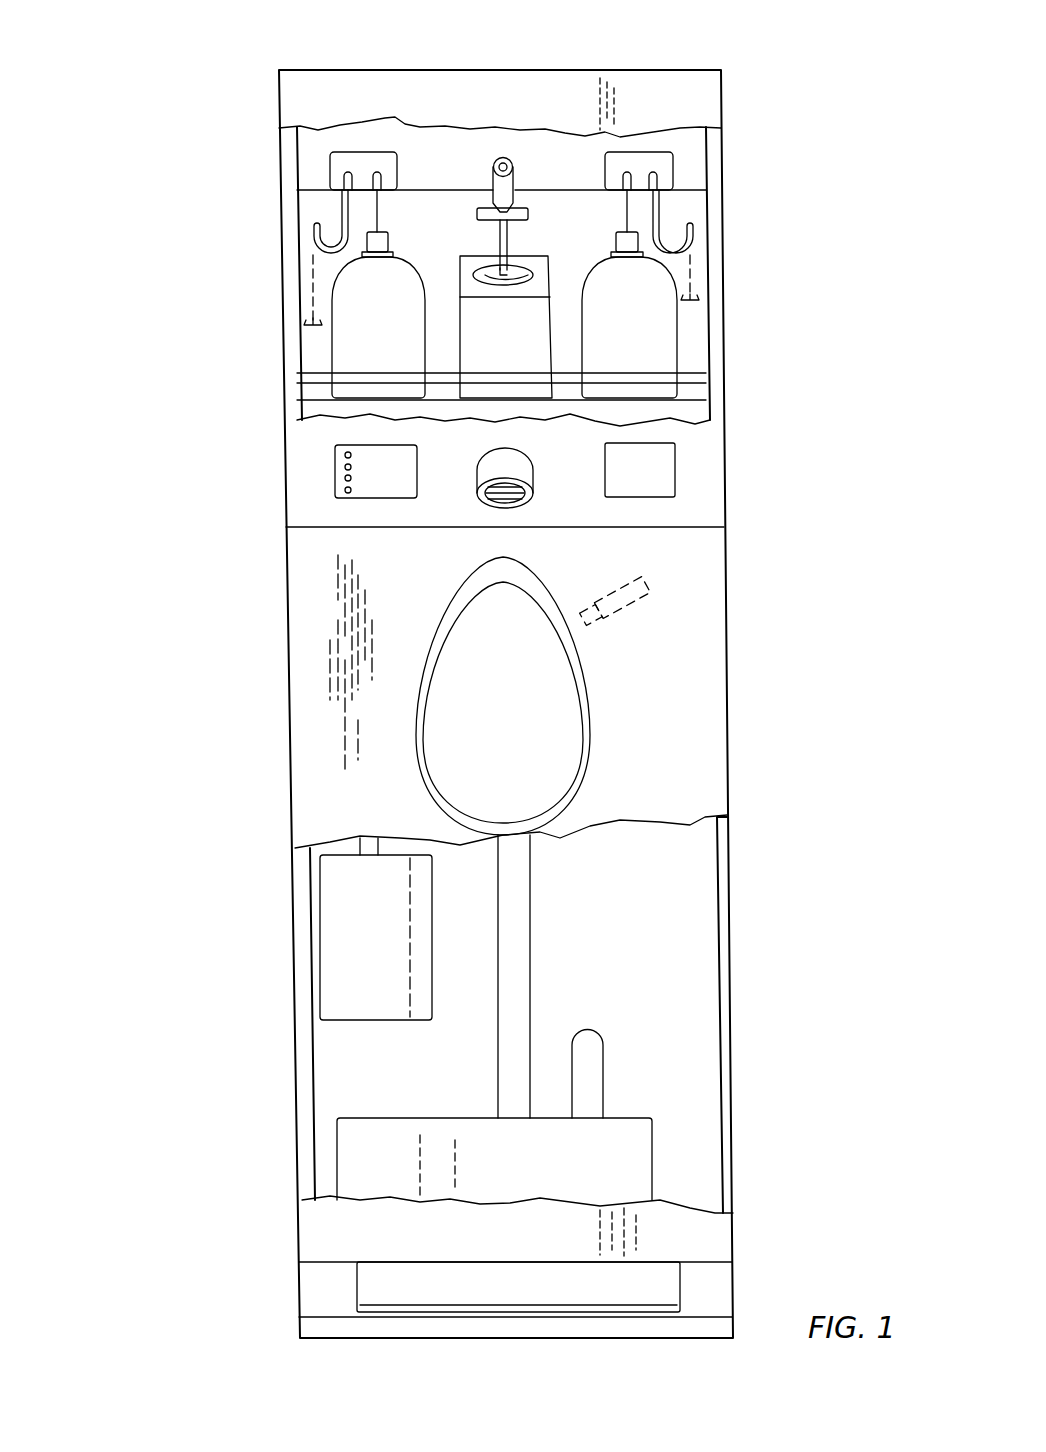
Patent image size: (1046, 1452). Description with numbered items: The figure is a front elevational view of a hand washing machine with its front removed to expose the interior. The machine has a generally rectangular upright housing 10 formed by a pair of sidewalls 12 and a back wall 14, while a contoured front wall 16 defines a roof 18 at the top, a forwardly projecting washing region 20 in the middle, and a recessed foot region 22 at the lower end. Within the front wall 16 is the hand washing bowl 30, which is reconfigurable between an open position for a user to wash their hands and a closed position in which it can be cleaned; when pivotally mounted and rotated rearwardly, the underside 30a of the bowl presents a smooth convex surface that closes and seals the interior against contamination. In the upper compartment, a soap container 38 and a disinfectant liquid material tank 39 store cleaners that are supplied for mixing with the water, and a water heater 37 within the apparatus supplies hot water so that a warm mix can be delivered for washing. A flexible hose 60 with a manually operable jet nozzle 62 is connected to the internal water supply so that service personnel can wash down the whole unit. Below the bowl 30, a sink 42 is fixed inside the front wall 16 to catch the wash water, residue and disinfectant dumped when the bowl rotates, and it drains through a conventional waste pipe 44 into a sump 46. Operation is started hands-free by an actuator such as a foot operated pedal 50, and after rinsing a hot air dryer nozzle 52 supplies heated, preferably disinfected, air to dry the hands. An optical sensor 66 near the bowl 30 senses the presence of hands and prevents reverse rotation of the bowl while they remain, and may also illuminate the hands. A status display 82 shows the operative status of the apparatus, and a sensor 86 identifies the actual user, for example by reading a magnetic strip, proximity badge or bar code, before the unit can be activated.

The housing 10 is at (218, 548).
The sidewalls 12 is at (285, 255).
The back wall 14 is at (418, 150).
The front wall 16 is at (700, 430).
The roof 18 is at (688, 98).
The washing region 20 is at (670, 728).
The foot region 22 is at (700, 1235).
The hand washing bowl 30 is at (432, 655).
The underside of the bowl 30a is at (463, 698).
The water heater 37 is at (357, 940).
The soap container 38 is at (657, 330).
The disinfectant liquid material tank 39 is at (372, 325).
The sink 42 is at (690, 845).
The waste pipe 44 is at (530, 997).
The sump 46 is at (385, 1130).
The foot operated pedal 50 is at (657, 1290).
The hot air dryer nozzle 52 is at (533, 480).
The flexible hose 60 is at (497, 232).
The jet nozzle 62 is at (505, 157).
The optical sensor 66 is at (645, 608).
The status display 82 is at (335, 468).
The sensor 86 is at (676, 477).